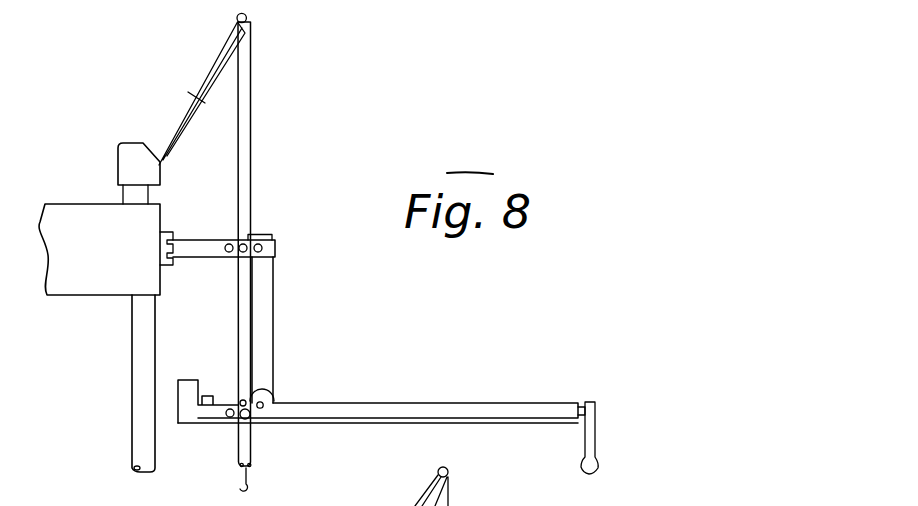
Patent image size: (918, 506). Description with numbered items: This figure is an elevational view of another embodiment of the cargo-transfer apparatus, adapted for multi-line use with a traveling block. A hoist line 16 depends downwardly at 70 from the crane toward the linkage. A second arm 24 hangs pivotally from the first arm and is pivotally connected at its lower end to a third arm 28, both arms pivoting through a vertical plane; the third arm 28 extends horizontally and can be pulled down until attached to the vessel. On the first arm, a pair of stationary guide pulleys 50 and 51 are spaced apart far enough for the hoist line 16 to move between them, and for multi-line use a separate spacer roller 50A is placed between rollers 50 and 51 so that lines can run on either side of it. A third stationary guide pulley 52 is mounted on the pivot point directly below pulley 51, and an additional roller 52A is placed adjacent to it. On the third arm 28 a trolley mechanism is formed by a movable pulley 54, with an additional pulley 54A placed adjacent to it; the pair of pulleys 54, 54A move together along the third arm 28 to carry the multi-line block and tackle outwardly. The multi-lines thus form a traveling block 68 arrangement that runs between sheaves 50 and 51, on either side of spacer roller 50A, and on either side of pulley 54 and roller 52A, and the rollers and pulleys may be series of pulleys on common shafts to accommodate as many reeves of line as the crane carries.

The depending point 70 is at (247, 18).
The hoist line 16 is at (250, 123).
The spacer roller 50A is at (243, 243).
The stationary guide pulley 50 is at (228, 243).
The stationary guide pulley 51 is at (276, 245).
The second arm 24 is at (274, 300).
The additional roller 52A is at (245, 398).
The third stationary guide pulley 52 is at (272, 383).
The third arm 28 is at (502, 402).
The movable pulley 54 is at (248, 430).
The additional pulley 54A is at (224, 426).
The traveling block 68 is at (252, 467).